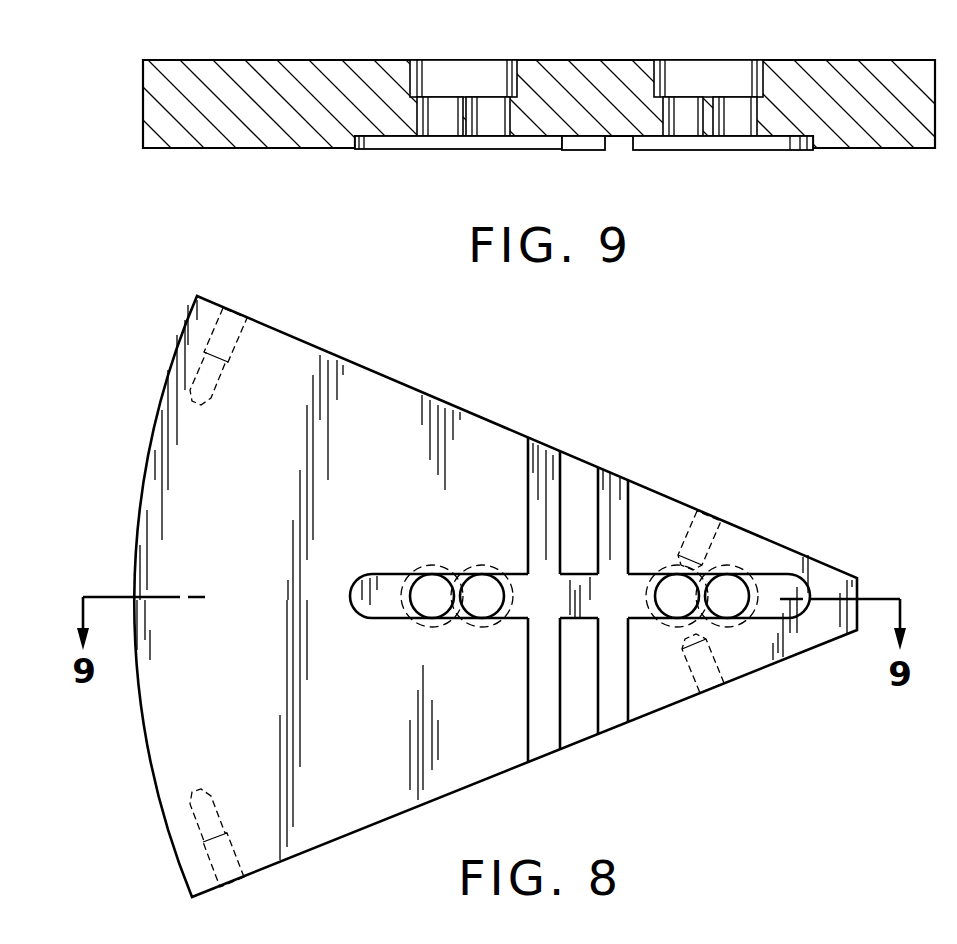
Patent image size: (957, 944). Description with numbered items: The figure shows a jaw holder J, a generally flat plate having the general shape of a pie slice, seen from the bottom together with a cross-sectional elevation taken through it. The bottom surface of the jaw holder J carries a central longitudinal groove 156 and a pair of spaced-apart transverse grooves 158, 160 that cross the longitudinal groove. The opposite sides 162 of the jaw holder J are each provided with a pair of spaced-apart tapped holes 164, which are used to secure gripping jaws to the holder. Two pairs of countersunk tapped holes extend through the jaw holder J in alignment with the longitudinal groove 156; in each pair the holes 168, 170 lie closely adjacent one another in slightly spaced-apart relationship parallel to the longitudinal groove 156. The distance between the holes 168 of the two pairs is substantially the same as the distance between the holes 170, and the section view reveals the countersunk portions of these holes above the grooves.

In FIG. 9, the jaw holder J is at (808, 160).
In FIG. 8, the jaw holder J is at (430, 383).
In FIG. 9, the central longitudinal groove 156 is at (496, 143).
In FIG. 8, the central longitudinal groove 156 is at (391, 580).
In FIG. 9, the transverse groove 158 is at (558, 143).
In FIG. 8, the transverse groove 158 is at (535, 512).
In FIG. 9, the transverse groove 160 is at (632, 143).
In FIG. 8, the transverse groove 160 is at (620, 502).
In FIG. 8, the opposite sides 162 is at (336, 368).
In FIG. 8, the tapped holes 164 is at (207, 332).
In FIG. 9, the countersunk tapped hole 168 is at (420, 113).
In FIG. 8, the countersunk tapped hole 168 is at (448, 605).
In FIG. 9, the countersunk tapped hole 170 is at (463, 77).
In FIG. 8, the countersunk tapped hole 170 is at (497, 600).